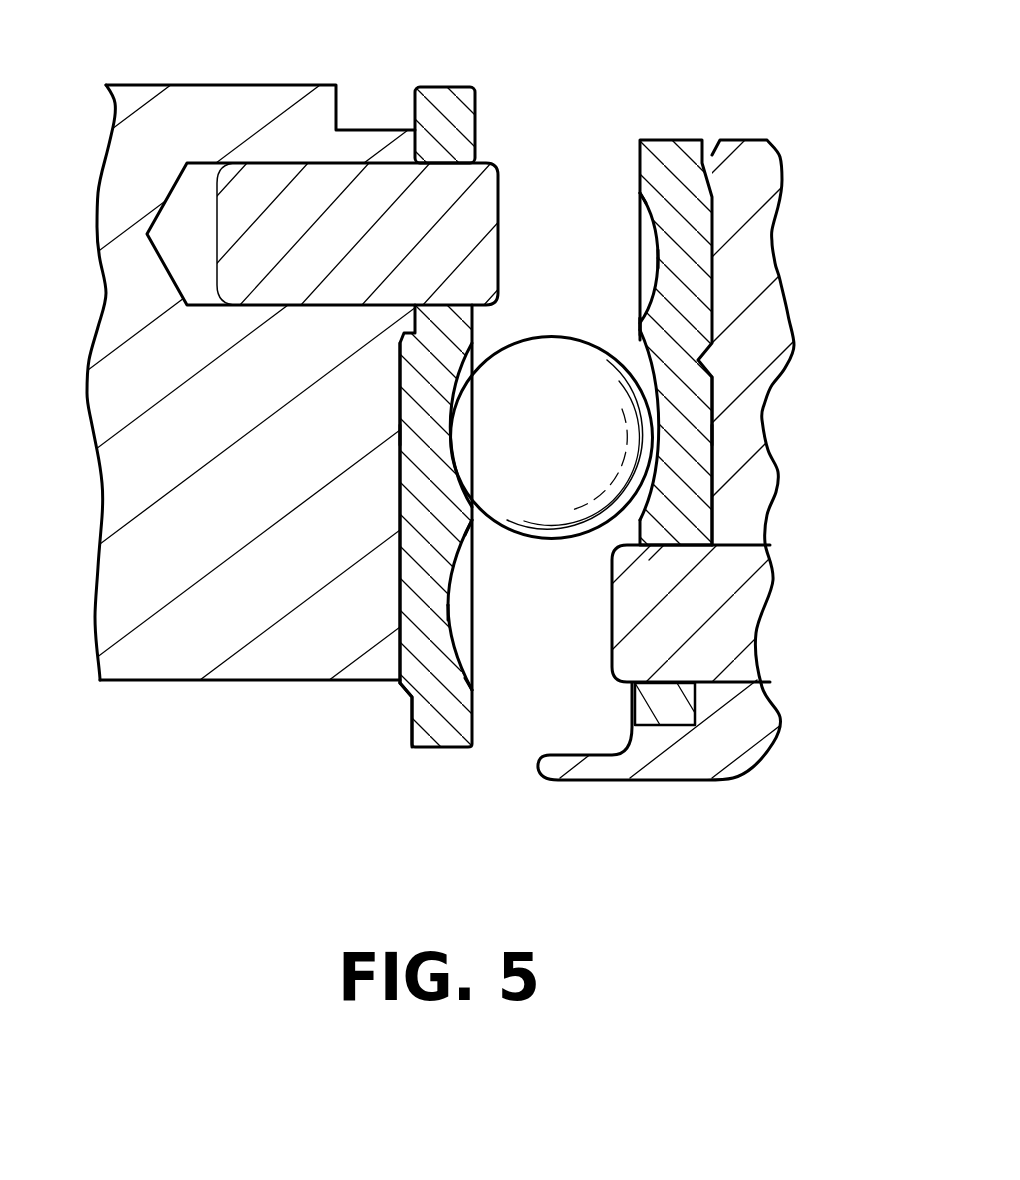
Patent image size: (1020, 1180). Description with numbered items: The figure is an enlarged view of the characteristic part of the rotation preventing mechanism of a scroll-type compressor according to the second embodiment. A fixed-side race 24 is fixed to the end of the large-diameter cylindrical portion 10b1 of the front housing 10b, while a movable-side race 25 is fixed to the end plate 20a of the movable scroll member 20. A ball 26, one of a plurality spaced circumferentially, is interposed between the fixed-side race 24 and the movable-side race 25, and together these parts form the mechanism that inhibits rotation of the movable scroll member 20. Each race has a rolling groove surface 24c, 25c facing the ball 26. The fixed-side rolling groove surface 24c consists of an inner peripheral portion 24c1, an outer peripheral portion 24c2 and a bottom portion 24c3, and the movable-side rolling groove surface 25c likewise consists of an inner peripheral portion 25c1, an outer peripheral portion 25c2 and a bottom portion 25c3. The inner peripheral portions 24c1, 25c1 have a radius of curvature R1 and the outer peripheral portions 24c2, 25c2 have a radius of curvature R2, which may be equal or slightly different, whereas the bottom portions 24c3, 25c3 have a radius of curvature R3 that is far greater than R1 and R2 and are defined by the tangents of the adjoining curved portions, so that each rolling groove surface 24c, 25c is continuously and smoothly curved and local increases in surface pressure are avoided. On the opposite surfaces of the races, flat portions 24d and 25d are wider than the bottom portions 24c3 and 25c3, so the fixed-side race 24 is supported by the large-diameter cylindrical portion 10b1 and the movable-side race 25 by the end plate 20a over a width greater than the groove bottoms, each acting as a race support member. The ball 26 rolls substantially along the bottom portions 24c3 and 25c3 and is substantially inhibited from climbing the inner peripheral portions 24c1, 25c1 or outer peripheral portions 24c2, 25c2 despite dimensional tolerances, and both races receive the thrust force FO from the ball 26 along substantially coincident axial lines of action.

The front housing 10b is at (147, 690).
The large-diameter cylindrical portion 10b1 is at (237, 683).
The movable scroll member 20 is at (717, 790).
The end plate 20a is at (740, 720).
The fixed-side race 24 is at (455, 86).
The rolling groove surface 24c is at (467, 667).
The inner peripheral portion 24c1 is at (470, 560).
The outer peripheral portion 24c2 is at (477, 673).
The bottom portion 24c3 is at (407, 690).
The flat portion 24d is at (393, 653).
The movable-side race 25 is at (672, 140).
The rolling groove surface 25c is at (578, 228).
The inner peripheral portion 25c1 is at (637, 317).
The outer peripheral portion 25c2 is at (638, 195).
The bottom portion 25c3 is at (655, 292).
The flat portion 25d is at (712, 485).
The ball 26 is at (555, 520).
The radius of curvature of inner peripheral portions R1 is at (638, 317).
The radius of curvature of outer peripheral portions R2 is at (638, 197).
The radius of curvature of bottom portions R3 is at (657, 260).
The thrust force FO is at (452, 435).